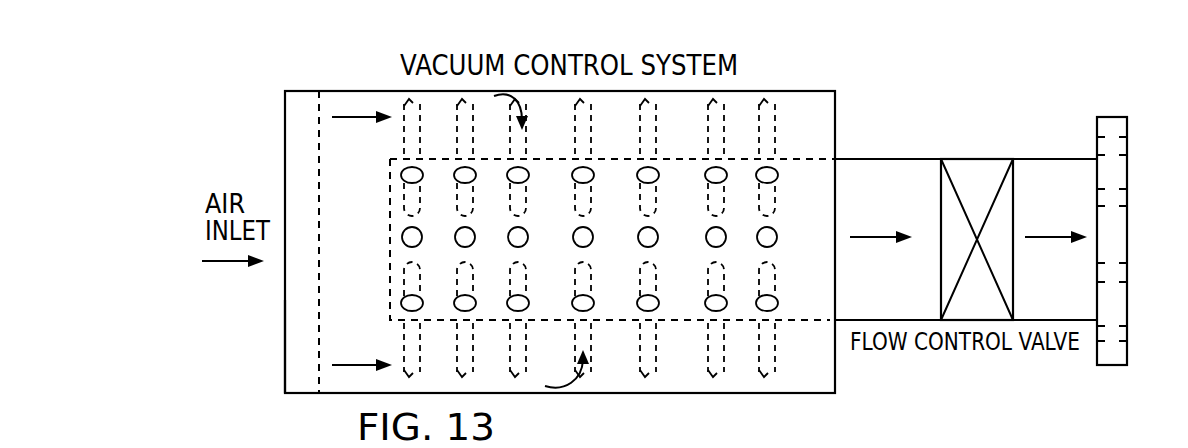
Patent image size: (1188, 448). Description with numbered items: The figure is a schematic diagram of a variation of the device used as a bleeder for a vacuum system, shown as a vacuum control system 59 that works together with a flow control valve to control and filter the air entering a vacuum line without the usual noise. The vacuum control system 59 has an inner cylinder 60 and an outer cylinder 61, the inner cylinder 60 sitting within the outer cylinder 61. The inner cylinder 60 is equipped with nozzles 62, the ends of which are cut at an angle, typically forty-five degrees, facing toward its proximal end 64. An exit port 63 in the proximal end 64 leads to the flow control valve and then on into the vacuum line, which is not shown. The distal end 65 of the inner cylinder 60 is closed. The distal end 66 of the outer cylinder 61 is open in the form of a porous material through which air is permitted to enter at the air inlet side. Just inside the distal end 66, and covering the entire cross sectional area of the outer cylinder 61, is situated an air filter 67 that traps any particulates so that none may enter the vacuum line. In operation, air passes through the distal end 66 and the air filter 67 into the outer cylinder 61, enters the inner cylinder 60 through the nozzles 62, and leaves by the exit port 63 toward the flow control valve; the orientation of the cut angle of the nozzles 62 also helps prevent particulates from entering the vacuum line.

The vacuum control system 59 is at (812, 60).
The inner cylinder 60 is at (822, 246).
The outer cylinder 61 is at (603, 394).
The nozzles 62 is at (710, 360).
The exit port 63 is at (840, 300).
The proximal end 64 is at (836, 321).
The distal end of the inner cylinder 65 is at (390, 238).
The distal end of the outer cylinder 66 is at (285, 355).
The air filter 67 is at (319, 141).